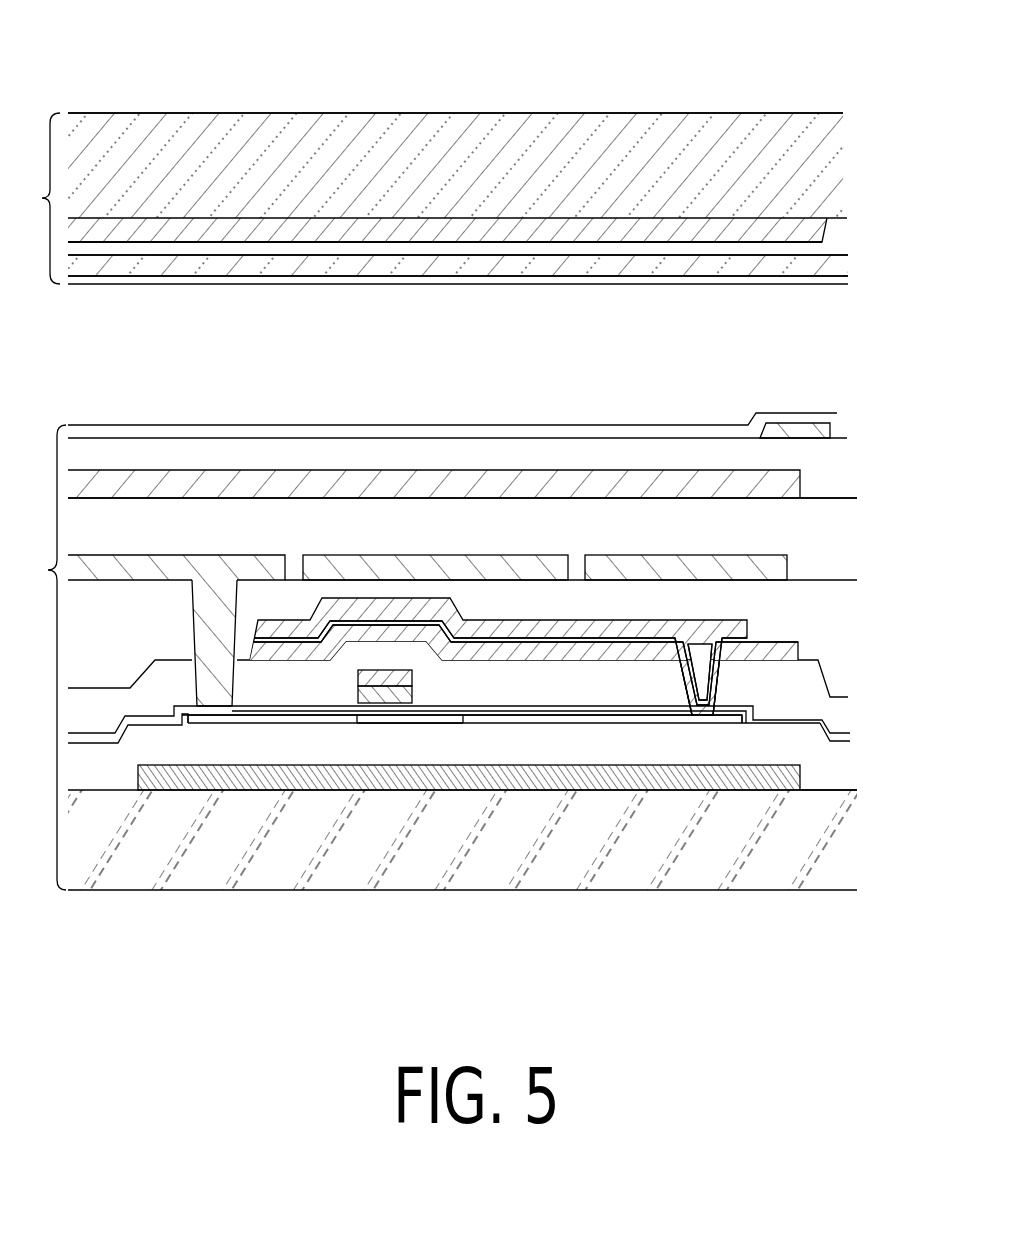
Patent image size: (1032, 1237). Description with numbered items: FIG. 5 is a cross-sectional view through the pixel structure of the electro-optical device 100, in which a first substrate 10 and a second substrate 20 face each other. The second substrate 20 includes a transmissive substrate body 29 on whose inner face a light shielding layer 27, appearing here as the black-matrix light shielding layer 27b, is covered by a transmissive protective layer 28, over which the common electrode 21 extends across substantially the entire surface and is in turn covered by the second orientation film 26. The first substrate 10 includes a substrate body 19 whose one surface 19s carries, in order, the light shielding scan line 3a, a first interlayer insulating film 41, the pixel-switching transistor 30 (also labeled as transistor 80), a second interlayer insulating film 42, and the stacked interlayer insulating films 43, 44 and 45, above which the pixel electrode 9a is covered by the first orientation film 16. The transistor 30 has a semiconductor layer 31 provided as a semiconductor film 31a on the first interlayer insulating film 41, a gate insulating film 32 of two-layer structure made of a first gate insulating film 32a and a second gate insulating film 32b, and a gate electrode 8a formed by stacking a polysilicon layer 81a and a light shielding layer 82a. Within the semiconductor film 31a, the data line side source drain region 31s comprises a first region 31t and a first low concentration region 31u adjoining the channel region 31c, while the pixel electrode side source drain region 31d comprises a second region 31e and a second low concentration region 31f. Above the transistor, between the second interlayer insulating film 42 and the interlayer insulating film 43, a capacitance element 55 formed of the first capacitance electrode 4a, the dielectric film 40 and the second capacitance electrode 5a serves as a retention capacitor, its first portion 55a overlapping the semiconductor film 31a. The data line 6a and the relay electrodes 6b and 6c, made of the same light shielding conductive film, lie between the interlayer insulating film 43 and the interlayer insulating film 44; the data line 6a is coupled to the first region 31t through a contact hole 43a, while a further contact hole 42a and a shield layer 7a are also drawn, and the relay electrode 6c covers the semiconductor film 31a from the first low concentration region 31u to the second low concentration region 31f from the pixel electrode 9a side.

The electro-optical device 100 is at (755, 112).
The second substrate 20 is at (37, 198).
The substrate body 29 is at (815, 143).
The light shielding layer 27 is at (517, 233).
The light shielding layer 27b is at (517, 233).
The protective layer 28 is at (327, 250).
The common electrode 21 is at (230, 270).
The second orientation film 26 is at (277, 280).
The first substrate 10 is at (40, 657).
The first orientation film 16 is at (642, 432).
The interlayer insulating film 45 is at (835, 447).
The pixel electrode 9a is at (782, 430).
The shield layer 7a is at (310, 488).
The interlayer insulating film 44 is at (835, 517).
The data line 6a is at (163, 563).
The relay electrode 6c is at (355, 560).
The relay electrode 6b is at (595, 562).
The interlayer insulating film 43 is at (815, 625).
The contact hole 43a is at (195, 628).
The capacitance element 55 is at (449, 793).
The second capacitance electrode 5a is at (262, 641).
The dielectric film 40 is at (285, 641).
The first capacitance electrode 4a is at (320, 645).
The first portion 55a is at (662, 614).
The contact hole 42a is at (683, 690).
The second interlayer insulating film 42 is at (815, 710).
The transistor 30 is at (438, 518).
The transistor 80 is at (419, 518).
The gate electrode 8a is at (418, 530).
The polysilicon layer 81a is at (380, 680).
The light shielding layer 82a is at (392, 696).
The gate insulating film 32 is at (464, 840).
The first gate insulating film 32a is at (613, 715).
The second gate insulating film 32b is at (623, 708).
The semiconductor layer 31 is at (504, 853).
The data line side source drain region 31s is at (272, 846).
The first region 31t is at (290, 723).
The first low concentration region 31u is at (330, 723).
The semiconductor film 31a is at (382, 723).
The channel region 31c is at (395, 723).
The pixel electrode side source drain region 31d is at (594, 853).
The second low concentration region 31f is at (447, 720).
The second region 31e is at (567, 720).
The first interlayer insulating film 41 is at (835, 763).
The scan line 3a is at (722, 778).
The substrate body 19 is at (845, 836).
The one surface 19s is at (818, 792).